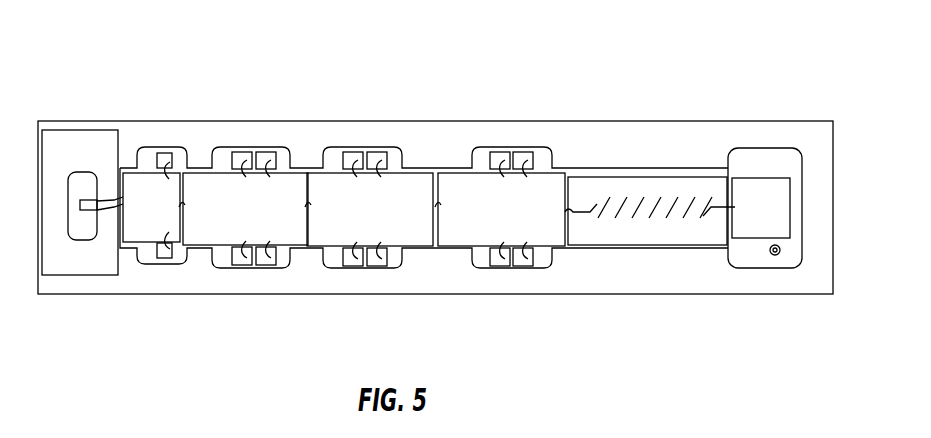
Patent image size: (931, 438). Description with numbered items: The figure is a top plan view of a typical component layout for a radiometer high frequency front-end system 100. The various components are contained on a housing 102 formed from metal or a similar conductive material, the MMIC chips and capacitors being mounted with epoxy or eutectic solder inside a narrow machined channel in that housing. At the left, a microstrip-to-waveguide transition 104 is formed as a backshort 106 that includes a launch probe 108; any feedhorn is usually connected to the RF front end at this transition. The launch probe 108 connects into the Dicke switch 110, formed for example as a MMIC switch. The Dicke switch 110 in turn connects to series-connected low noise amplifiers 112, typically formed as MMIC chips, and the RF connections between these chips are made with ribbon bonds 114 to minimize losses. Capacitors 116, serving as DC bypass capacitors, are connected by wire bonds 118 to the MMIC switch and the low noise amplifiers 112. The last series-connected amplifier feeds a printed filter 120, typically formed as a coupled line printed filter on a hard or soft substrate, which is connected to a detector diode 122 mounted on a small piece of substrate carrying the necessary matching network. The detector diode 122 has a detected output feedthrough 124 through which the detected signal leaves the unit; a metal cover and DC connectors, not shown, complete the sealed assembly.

The radiometer high frequency front-end system 100 is at (437, 56).
The housing 102 is at (810, 147).
The microstrip-to-waveguide transition 104 is at (75, 145).
The backshort 106 is at (88, 181).
The launch probe 108 is at (83, 206).
The Dicke switch 110 is at (175, 182).
The low noise amplifiers 112 is at (458, 237).
The ribbon bonds 114 is at (436, 203).
The capacitors 116 is at (353, 155).
The wire bonds 118 is at (524, 160).
The printed filter 120 is at (630, 182).
The detector diode 122 is at (765, 180).
The detected output feedthrough 124 is at (770, 257).